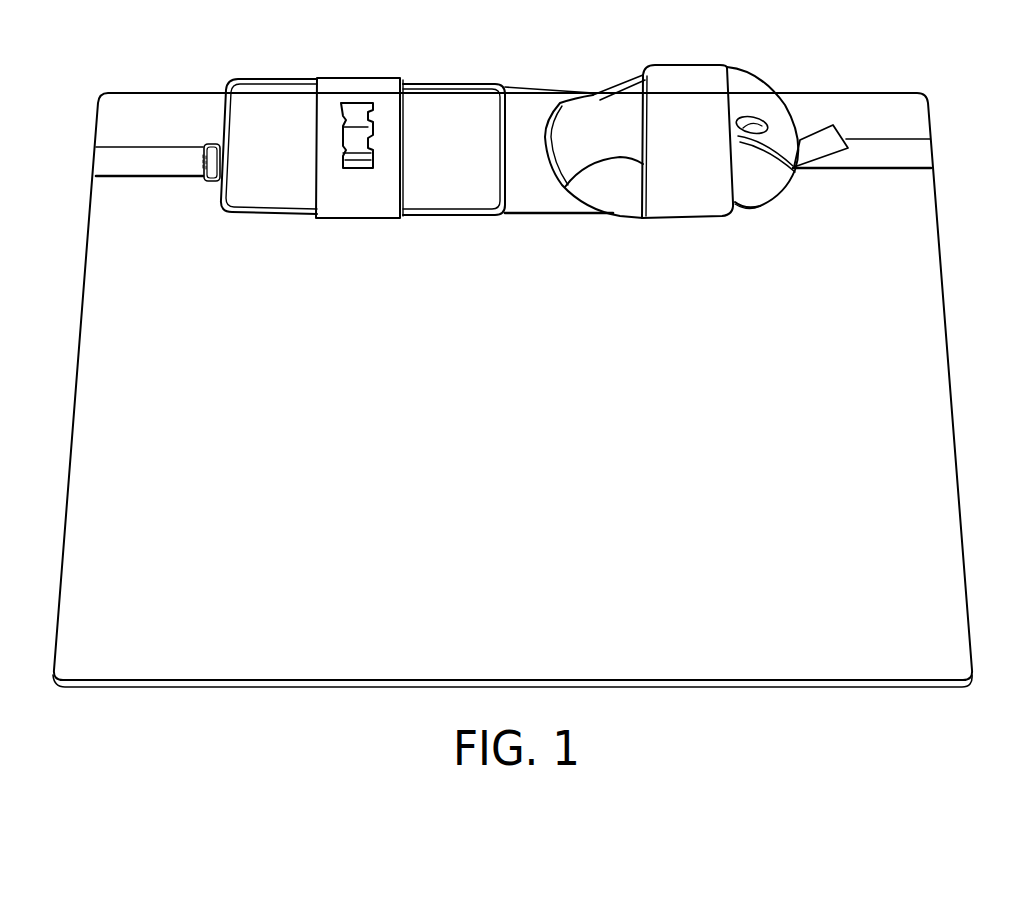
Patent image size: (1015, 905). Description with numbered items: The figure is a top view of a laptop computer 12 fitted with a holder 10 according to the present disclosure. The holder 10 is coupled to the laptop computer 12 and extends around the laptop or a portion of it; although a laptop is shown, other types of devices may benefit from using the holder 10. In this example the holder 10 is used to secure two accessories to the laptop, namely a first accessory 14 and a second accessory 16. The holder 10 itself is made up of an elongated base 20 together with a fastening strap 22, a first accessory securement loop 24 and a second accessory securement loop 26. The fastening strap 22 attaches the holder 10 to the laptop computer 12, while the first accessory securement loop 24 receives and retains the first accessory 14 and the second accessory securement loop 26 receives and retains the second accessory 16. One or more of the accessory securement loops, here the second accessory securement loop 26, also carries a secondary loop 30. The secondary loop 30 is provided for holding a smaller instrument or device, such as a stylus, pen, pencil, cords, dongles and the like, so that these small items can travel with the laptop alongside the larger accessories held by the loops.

The holder 10 is at (933, 155).
The laptop computer 12 is at (89, 213).
The first accessory 14 is at (612, 102).
The second accessory 16 is at (280, 90).
The elongated base 20 is at (533, 112).
The fastening strap 22 is at (867, 147).
The first accessory securement loop 24 is at (692, 73).
The second accessory securement loop 26 is at (377, 85).
The secondary loop 30 is at (355, 110).